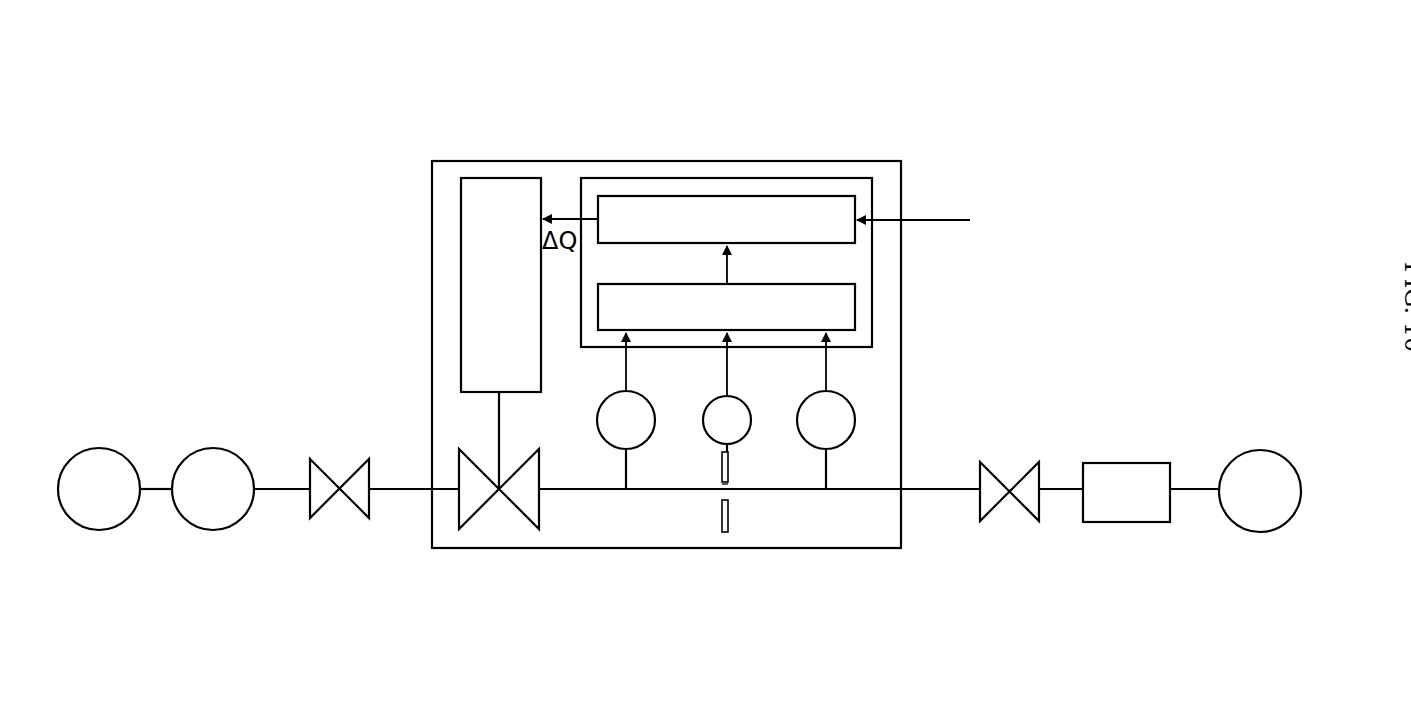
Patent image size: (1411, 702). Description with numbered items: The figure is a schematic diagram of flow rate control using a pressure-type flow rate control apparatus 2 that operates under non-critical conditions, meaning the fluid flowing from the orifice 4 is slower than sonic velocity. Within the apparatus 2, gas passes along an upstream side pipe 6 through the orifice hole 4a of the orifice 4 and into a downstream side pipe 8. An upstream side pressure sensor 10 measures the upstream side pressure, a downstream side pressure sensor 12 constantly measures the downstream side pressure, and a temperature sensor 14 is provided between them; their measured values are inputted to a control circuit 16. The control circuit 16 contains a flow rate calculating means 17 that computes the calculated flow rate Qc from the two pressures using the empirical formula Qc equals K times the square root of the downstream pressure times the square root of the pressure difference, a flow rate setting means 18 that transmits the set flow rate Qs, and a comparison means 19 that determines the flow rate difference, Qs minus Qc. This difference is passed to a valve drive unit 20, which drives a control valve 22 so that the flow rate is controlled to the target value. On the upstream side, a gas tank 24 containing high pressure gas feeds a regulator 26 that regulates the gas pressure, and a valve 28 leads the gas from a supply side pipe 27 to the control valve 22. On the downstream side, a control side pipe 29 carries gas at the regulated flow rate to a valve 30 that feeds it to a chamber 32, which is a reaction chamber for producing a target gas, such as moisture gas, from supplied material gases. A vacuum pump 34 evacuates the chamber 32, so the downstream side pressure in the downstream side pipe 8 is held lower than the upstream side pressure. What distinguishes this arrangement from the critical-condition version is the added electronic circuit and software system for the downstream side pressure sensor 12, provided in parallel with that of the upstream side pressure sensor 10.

The pressure-type flow rate control apparatus 2 is at (718, 161).
The orifice 4 is at (725, 497).
The orifice hole 4a is at (730, 495).
The upstream side pipe 6 is at (675, 491).
The downstream side pipe 8 is at (805, 491).
The upstream side pressure sensor 10 is at (603, 440).
The downstream side pressure sensor 12 is at (848, 440).
The temperature sensor 14 is at (745, 437).
The control circuit 16 is at (872, 325).
The flow rate calculating means 17 is at (855, 298).
The flow rate setting means 18 is at (937, 220).
The comparison means 19 is at (802, 196).
The valve drive unit 20 is at (497, 190).
The control valve 22 is at (475, 503).
The gas tank 24 is at (103, 512).
The regulator 26 is at (216, 514).
The supply side pipe 27 is at (398, 491).
The valve 28 is at (360, 500).
The control side pipe 29 is at (932, 492).
The valve 30 is at (1000, 503).
The chamber 32 is at (1128, 523).
The vacuum pump 34 is at (1253, 534).